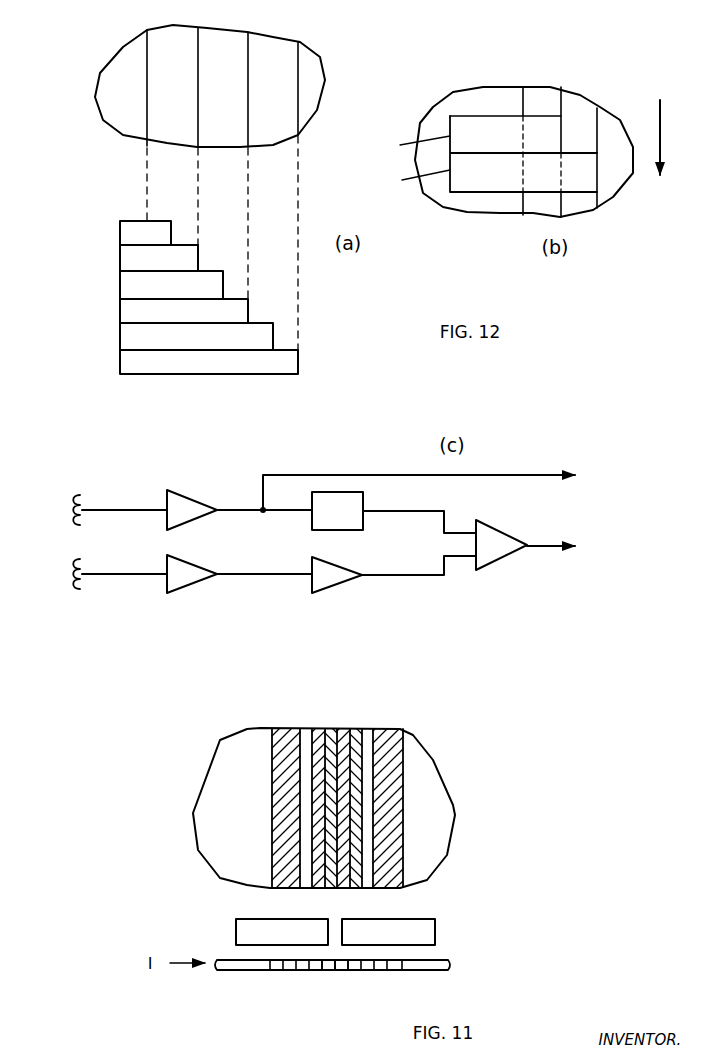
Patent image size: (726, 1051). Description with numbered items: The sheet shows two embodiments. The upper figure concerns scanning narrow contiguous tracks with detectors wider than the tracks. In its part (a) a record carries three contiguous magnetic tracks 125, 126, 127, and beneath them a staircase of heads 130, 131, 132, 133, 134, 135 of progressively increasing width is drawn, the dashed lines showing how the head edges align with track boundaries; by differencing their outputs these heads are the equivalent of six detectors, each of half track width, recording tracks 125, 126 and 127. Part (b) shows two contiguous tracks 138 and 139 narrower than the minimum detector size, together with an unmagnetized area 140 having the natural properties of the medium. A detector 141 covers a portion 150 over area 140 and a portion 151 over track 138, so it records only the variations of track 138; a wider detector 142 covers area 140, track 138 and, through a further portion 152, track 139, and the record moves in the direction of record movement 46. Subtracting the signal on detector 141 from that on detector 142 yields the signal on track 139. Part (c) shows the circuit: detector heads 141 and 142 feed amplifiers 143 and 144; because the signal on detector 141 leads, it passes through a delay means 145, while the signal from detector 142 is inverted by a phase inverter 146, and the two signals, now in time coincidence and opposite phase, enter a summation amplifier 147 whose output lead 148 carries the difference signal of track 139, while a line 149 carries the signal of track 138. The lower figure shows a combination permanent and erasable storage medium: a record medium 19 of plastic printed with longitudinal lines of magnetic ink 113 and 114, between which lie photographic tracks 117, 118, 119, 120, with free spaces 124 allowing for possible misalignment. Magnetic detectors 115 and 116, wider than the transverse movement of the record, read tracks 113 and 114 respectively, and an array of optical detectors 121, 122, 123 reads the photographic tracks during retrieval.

In FIG. 12, the contiguous magnetic track 125 is at (172, 87).
In FIG. 12, the contiguous magnetic track 126 is at (228, 89).
In FIG. 12, the contiguous magnetic track 127 is at (278, 88).
In FIG. 12, the head 130 is at (120, 233).
In FIG. 12, the head 131 is at (120, 259).
In FIG. 12, the head 132 is at (120, 285).
In FIG. 12, the head 133 is at (120, 311).
In FIG. 12, the head 134 is at (120, 337).
In FIG. 12, the head 135 is at (120, 360).
In FIG. 12, the track 138 is at (543, 120).
In FIG. 12, the track 139 is at (580, 158).
In FIG. 12, the area 140 is at (505, 101).
In FIG. 12, the detector 141 is at (73, 506).
In FIG. 12, the detector 142 is at (73, 571).
In FIG. 12, the amplifier 143 is at (185, 495).
In FIG. 12, the amplifier 144 is at (202, 582).
In FIG. 12, the delay means 145 is at (367, 507).
In FIG. 12, the phase inverter 146 is at (340, 583).
In FIG. 12, the summation amplifier 147 is at (507, 557).
In FIG. 12, the output lead 148 is at (555, 545).
In FIG. 12, the line 149 is at (555, 473).
In FIG. 12, the detector portion 150 is at (523, 154).
In FIG. 12, the detector portion 151 is at (538, 165).
In FIG. 12, the detector portion 152 is at (576, 185).
In FIG. 12, the direction of record movement 46 is at (676, 137).
In FIG. 11, the record medium 19 is at (424, 808).
In FIG. 11, the line of magnetic ink 113 is at (280, 730).
In FIG. 11, the line of magnetic ink 114 is at (393, 730).
In FIG. 11, the photographic track 117 is at (312, 728).
In FIG. 11, the photographic track 118 is at (332, 728).
In FIG. 11, the photographic track 119 is at (343, 728).
In FIG. 11, the photographic track 120 is at (357, 731).
In FIG. 11, the free space 124 is at (368, 762).
In FIG. 11, the magnetic detector 115 is at (236, 933).
In FIG. 11, the magnetic detector 116 is at (435, 937).
In FIG. 11, the optical detector 121 is at (317, 970).
In FIG. 11, the optical detector 122 is at (329, 970).
In FIG. 11, the optical detector 123 is at (343, 970).